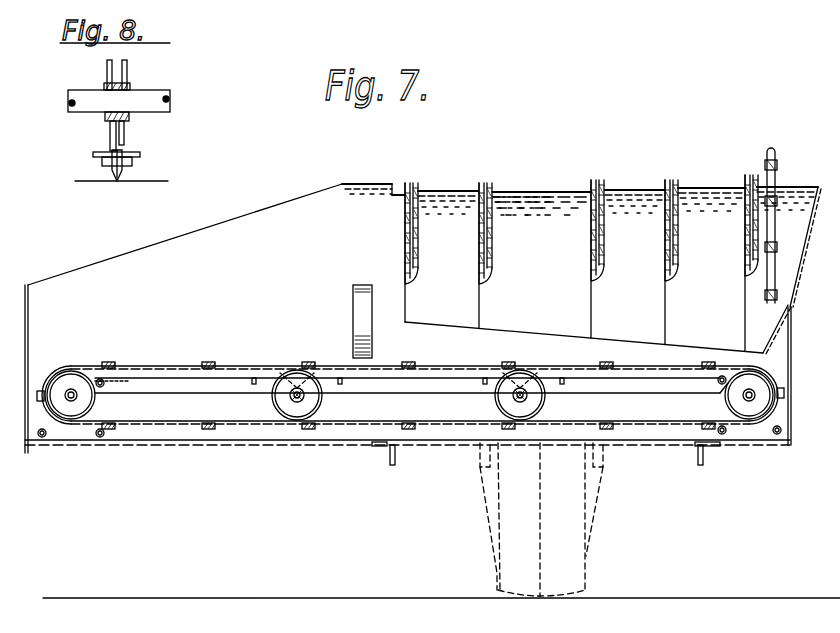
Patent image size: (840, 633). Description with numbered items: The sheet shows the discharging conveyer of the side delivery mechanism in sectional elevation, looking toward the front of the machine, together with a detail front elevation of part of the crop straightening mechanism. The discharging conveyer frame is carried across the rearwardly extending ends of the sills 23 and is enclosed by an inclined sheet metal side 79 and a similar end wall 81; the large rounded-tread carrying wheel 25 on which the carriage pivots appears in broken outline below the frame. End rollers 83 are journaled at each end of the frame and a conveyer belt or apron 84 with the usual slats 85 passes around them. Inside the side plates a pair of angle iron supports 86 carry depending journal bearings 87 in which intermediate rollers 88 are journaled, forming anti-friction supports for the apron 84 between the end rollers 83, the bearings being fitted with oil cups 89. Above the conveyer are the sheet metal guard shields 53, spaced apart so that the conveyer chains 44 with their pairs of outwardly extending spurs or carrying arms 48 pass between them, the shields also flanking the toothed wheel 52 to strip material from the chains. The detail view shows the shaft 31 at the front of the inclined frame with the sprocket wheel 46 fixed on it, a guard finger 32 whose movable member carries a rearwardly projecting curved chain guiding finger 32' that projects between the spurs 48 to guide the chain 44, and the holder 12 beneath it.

In FIG. 8, the blade holder bracket 12 is at (135, 153).
In FIG. 7, the sills 23 is at (395, 457).
In FIG. 7, the carrying wheel 25 is at (587, 556).
In FIG. 8, the shaft 31 is at (151, 93).
In FIG. 8, the guard fingers 32 is at (140, 165).
In FIG. 8, the chain guiding fingers 32' is at (141, 131).
In FIG. 7, the conveyer chains 44 is at (478, 240).
In FIG. 8, the conveyer chains 44 is at (105, 118).
In FIG. 8, the sprocket wheel 46 is at (104, 87).
In FIG. 7, the spurs or carrying arms 48 is at (480, 186).
In FIG. 8, the spurs or carrying arms 48 is at (107, 67).
In FIG. 7, the toothed wheel 52 is at (775, 178).
In FIG. 7, the guard shields 53 is at (692, 188).
In FIG. 7, the side 79 is at (165, 241).
In FIG. 7, the end wall 81 is at (797, 284).
In FIG. 7, the end rollers 83 is at (60, 384).
In FIG. 7, the conveyer belt or apron 84 is at (244, 367).
In FIG. 7, the slats 85 is at (205, 364).
In FIG. 7, the angle iron supports 86 is at (173, 394).
In FIG. 7, the depending journal bearings 87 is at (271, 381).
In FIG. 7, the intermediate rollers 88 is at (322, 404).
In FIG. 7, the oil cups 89 is at (296, 386).